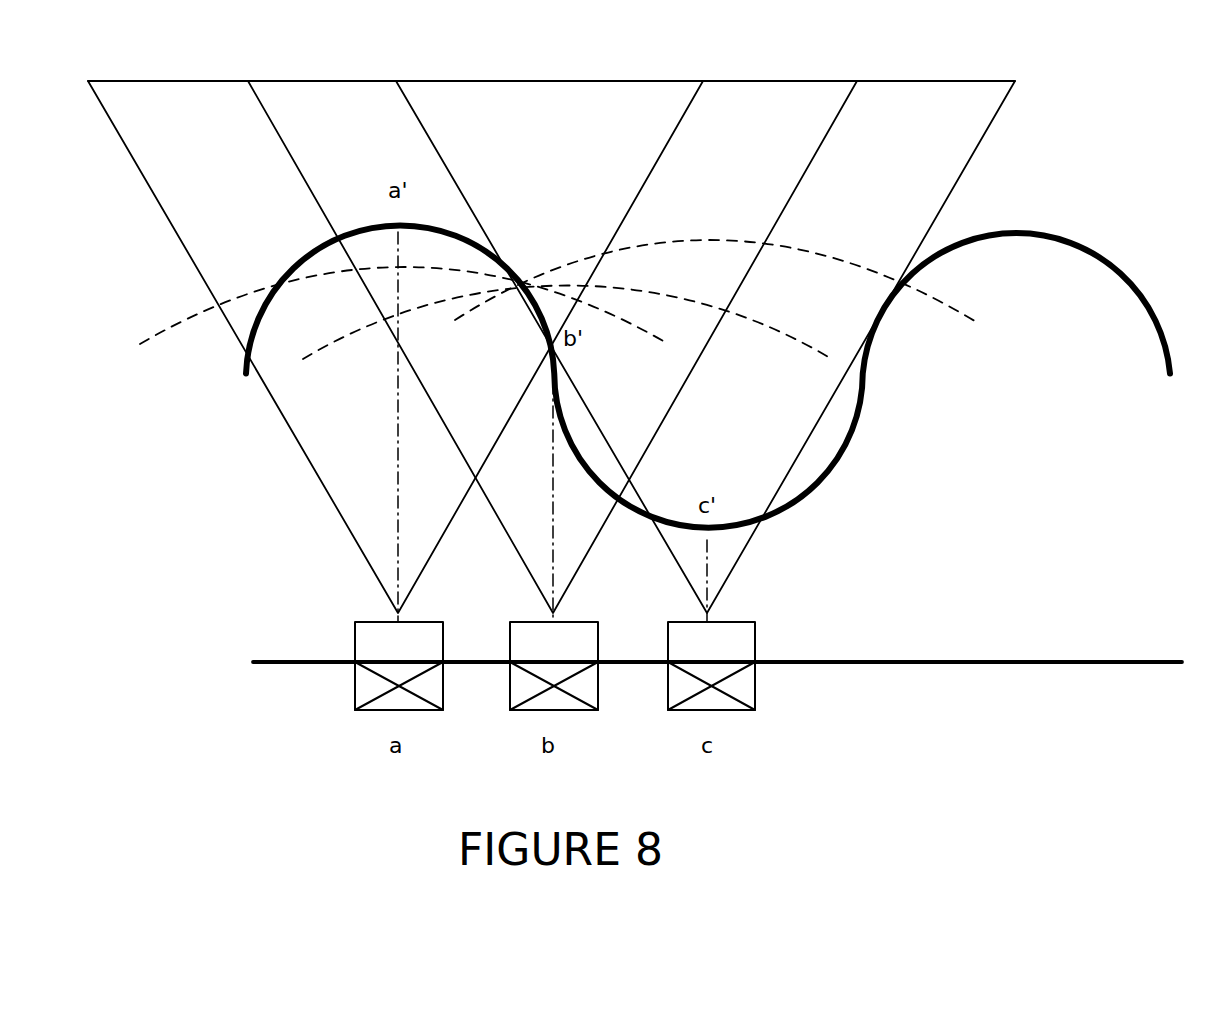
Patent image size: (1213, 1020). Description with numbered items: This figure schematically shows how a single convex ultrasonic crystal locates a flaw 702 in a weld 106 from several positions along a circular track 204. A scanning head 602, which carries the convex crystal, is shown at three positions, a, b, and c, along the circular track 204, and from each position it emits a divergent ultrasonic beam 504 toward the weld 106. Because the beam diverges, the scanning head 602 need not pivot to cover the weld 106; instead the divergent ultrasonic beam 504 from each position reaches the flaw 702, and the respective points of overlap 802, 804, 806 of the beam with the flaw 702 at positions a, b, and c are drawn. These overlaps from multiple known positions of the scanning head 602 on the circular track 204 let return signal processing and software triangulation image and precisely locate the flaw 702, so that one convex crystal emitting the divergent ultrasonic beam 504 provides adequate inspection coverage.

The weld 106 is at (873, 333).
The circular track 204 is at (1085, 664).
The divergent ultrasonic beam 504 is at (419, 120).
The scanning head 602 is at (368, 712).
The flaw 702 is at (517, 276).
The point of overlap 802 is at (161, 332).
The point of overlap 804 is at (761, 328).
The point of overlap 806 is at (784, 243).